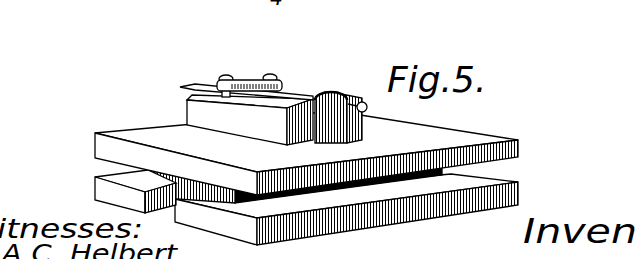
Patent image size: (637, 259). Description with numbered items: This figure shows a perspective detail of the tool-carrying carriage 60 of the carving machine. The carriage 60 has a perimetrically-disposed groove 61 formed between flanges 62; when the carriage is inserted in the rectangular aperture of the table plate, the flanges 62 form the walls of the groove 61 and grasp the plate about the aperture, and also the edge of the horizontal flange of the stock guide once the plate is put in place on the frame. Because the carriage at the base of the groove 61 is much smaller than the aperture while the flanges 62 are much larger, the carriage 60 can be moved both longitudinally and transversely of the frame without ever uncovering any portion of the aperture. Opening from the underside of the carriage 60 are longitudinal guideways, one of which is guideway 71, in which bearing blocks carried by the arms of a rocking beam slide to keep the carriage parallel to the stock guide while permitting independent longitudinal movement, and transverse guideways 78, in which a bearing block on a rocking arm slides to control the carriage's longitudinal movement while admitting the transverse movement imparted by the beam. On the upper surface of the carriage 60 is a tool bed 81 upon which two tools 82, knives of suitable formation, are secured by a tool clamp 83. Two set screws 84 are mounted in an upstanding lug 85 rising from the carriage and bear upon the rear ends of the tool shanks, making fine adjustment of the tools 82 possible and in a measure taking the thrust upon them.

The carriage 60 is at (455, 138).
The perimetrically-disposed groove 61 is at (476, 182).
The flanges 62 is at (100, 185).
The longitudinal guideway 71 is at (143, 203).
The guideways 78 is at (343, 188).
The tool bed 81 is at (275, 107).
The tools 82 is at (284, 94).
The tool clamp 83 is at (247, 80).
The set screws 84 is at (353, 103).
The upstanding lug 85 is at (337, 97).